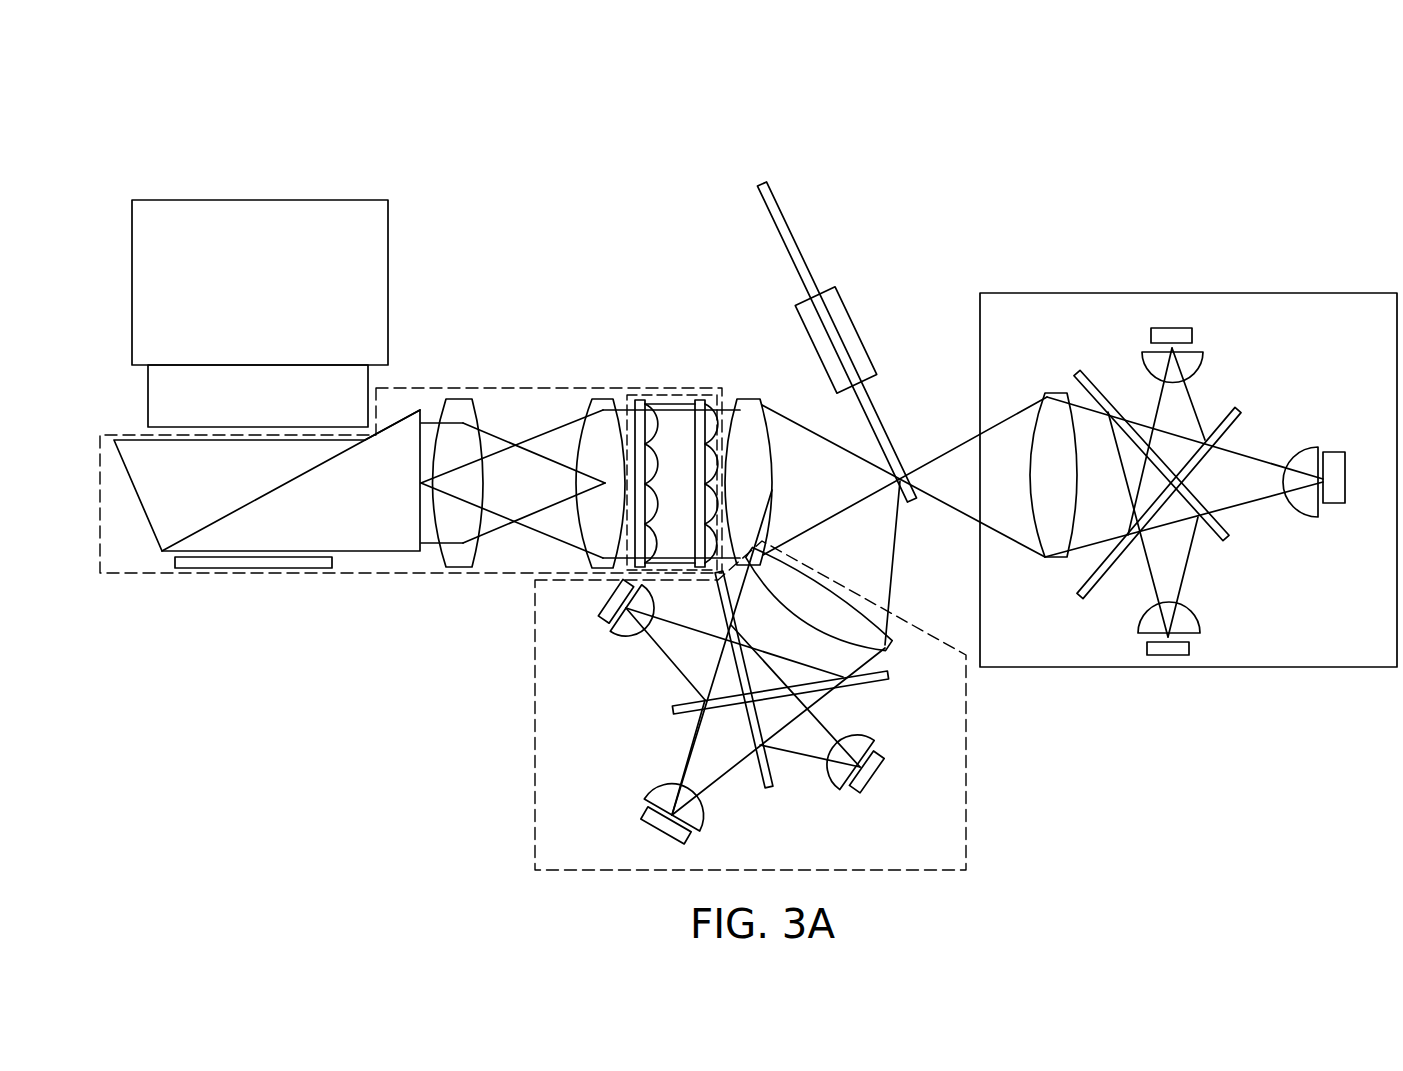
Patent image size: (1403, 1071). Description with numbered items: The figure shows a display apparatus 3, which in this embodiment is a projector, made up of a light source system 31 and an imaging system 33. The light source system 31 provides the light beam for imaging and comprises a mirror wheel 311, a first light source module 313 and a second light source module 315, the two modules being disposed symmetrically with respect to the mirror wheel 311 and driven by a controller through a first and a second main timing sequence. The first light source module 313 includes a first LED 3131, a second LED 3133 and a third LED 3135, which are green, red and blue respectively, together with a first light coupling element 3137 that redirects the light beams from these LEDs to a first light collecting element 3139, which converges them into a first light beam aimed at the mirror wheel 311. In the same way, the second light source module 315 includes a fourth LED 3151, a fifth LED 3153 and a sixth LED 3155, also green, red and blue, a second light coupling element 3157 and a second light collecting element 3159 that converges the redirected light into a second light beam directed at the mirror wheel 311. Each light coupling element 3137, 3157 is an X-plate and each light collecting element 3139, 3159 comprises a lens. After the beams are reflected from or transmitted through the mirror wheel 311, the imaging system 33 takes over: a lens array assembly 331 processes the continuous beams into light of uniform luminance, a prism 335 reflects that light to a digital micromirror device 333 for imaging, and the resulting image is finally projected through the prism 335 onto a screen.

The display apparatus 3 is at (872, 118).
The light source system 31 is at (968, 723).
The imaging system 33 is at (503, 387).
The mirror wheel 311 is at (792, 230).
The first light source module 313 is at (967, 817).
The second light source module 315 is at (1069, 293).
The lens array assembly 331 is at (667, 395).
The digital micromirror device 333 is at (227, 563).
The prism 335 is at (150, 495).
The first LED 3131 is at (627, 642).
The second LED 3133 is at (700, 832).
The third LED 3135 is at (872, 787).
The first light coupling element 3137 is at (673, 712).
The first light collecting element 3139 is at (883, 653).
The fourth LED 3151 is at (1192, 610).
The fifth LED 3153 is at (1307, 443).
The sixth LED 3155 is at (1167, 328).
The second light coupling element 3157 is at (1237, 405).
The second light collecting element 3159 is at (1058, 558).